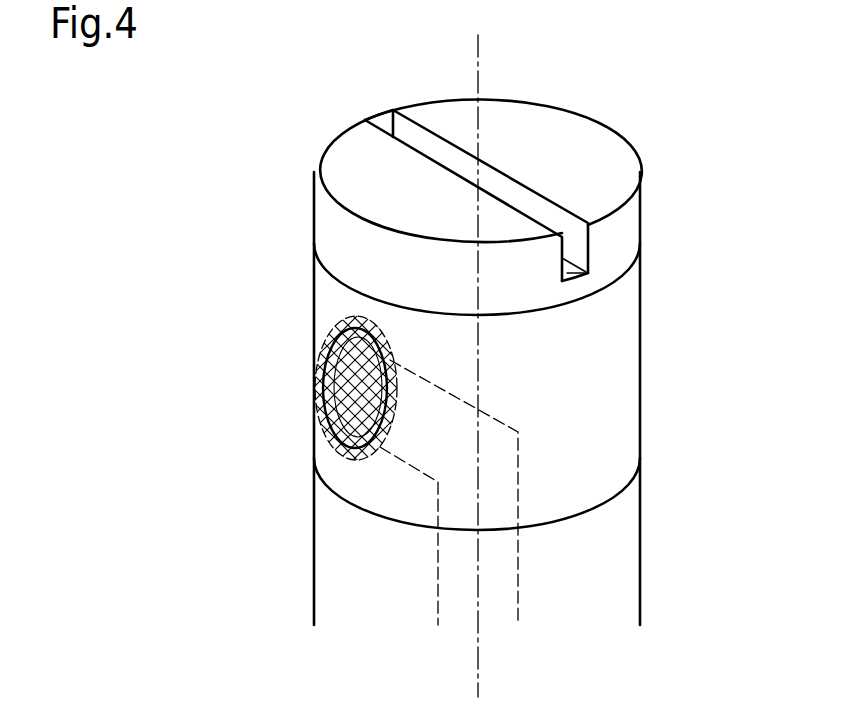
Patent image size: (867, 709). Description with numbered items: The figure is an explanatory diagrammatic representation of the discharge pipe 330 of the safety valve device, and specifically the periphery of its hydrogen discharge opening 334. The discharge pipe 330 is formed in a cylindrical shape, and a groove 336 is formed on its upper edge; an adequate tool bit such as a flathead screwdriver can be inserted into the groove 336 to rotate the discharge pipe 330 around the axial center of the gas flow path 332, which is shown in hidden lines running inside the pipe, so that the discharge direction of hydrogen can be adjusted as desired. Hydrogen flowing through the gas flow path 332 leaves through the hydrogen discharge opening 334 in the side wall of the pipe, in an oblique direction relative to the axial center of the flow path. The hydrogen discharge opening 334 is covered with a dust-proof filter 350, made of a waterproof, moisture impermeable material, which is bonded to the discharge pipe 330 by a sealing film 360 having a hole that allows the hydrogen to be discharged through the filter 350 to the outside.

The discharge pipe 330 is at (595, 123).
The groove 336 is at (570, 272).
The dust-proof filter 350 is at (337, 323).
The hydrogen discharge opening 334 is at (326, 379).
The sealing film 360 is at (600, 385).
The gas flow path 332 is at (436, 577).